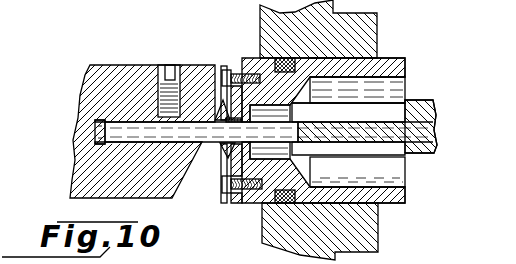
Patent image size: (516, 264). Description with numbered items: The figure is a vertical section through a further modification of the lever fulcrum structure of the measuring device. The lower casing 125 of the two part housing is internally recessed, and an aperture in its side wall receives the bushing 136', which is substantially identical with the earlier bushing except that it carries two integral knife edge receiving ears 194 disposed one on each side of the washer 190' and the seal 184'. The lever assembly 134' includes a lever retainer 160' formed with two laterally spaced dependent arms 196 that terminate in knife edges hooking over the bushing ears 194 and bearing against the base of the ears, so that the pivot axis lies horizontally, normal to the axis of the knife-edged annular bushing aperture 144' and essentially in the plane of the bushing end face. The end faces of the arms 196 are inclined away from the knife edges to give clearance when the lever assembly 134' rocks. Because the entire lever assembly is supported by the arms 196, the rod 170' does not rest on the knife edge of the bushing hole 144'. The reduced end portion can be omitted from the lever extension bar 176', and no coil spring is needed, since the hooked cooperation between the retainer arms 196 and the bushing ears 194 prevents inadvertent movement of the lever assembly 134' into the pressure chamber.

The lower casing 125 is at (368, 38).
The lever assembly 134' is at (380, 131).
The bushing 136' is at (377, 123).
The bushing aperture 144' is at (270, 141).
The lever retainer 160' is at (142, 116).
The rod 170' is at (264, 141).
The lever extension bar 176' is at (382, 127).
The seal 184' is at (321, 144).
The washer 190' is at (240, 200).
The knife edge receiving ears 194 is at (225, 155).
The dependent arms 196 is at (225, 68).